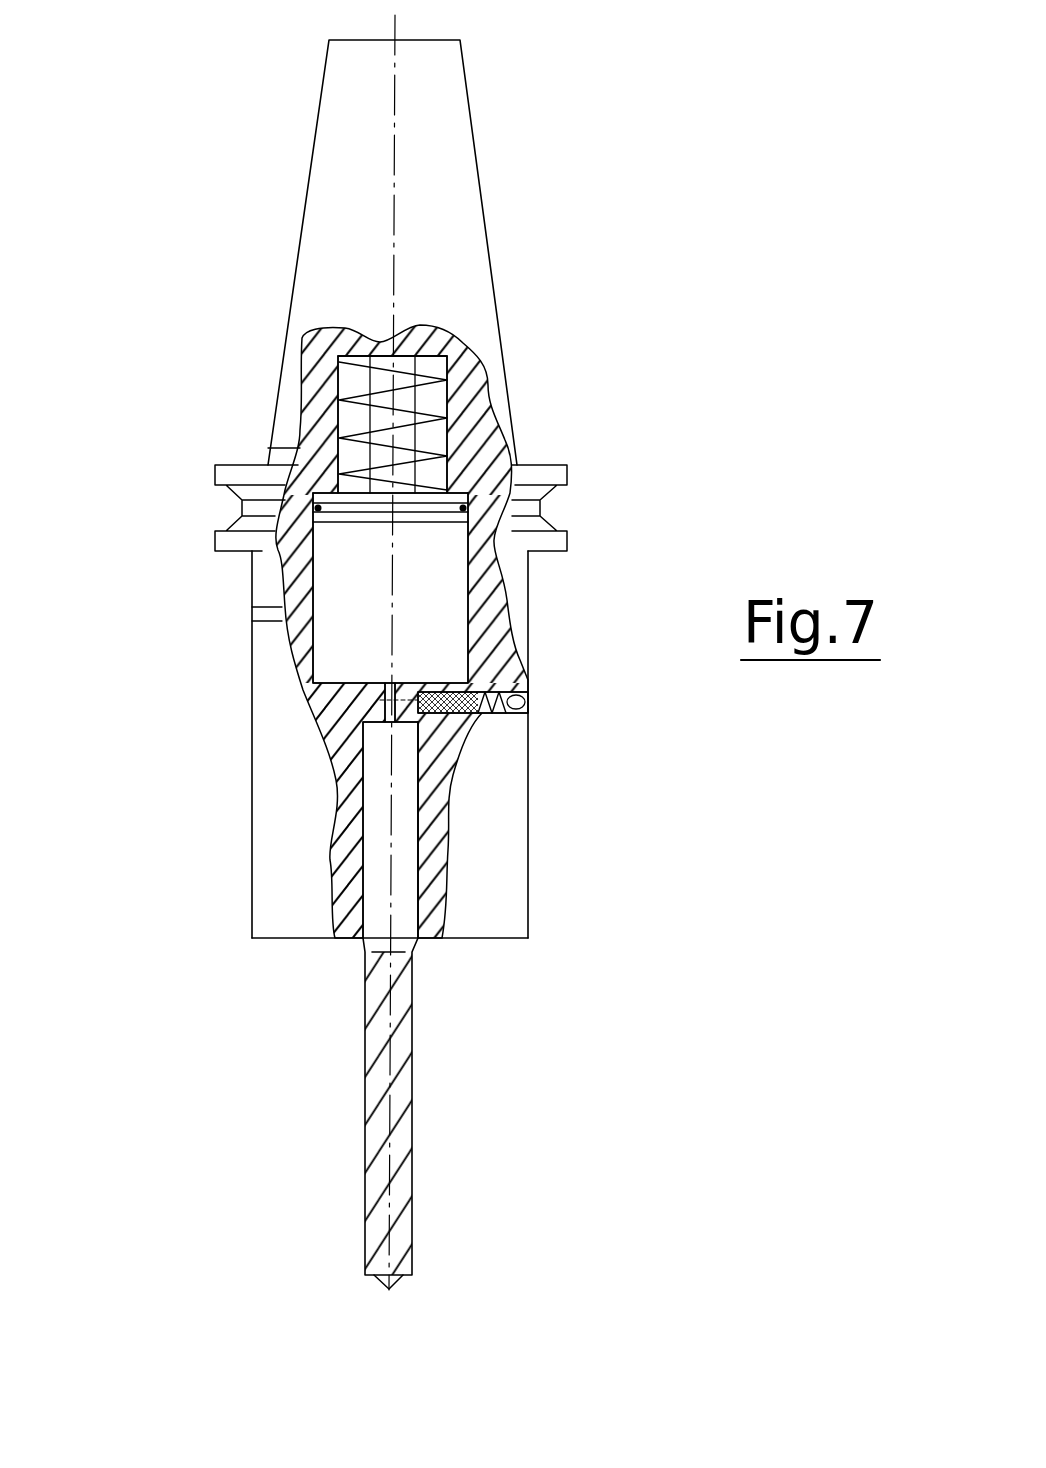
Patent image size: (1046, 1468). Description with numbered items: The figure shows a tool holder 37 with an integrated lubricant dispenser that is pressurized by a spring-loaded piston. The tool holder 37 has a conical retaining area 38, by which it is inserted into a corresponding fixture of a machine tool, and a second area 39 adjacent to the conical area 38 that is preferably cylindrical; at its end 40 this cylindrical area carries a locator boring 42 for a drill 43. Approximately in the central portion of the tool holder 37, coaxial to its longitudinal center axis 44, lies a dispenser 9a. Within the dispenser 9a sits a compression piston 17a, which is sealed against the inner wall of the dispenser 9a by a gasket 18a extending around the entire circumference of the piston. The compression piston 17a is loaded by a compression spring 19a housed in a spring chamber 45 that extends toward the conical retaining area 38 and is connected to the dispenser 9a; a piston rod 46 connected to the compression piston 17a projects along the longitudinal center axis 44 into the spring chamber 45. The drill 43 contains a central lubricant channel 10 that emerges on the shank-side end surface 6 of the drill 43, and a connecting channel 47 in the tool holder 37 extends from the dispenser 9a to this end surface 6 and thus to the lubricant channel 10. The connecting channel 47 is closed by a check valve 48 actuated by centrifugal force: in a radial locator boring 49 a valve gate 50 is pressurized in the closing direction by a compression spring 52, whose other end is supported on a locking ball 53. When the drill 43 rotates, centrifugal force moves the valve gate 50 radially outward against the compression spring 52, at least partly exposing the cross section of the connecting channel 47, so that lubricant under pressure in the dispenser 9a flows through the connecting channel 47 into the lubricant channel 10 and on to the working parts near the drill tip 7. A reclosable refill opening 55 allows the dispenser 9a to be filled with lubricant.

The longitudinal center axis 44 is at (396, 38).
The conical retaining area 38 is at (484, 172).
The tool holder 37 is at (520, 259).
The compression spring 19a is at (452, 365).
The spring chamber 45 is at (347, 392).
The piston rod 46 is at (405, 418).
The compression piston 17a is at (353, 488).
The gasket 18a is at (316, 507).
The dispenser 9a is at (442, 574).
The refill opening 55 is at (272, 615).
The connecting channel 47 is at (387, 683).
The radial locator boring 49 is at (490, 688).
The compression spring 52 is at (500, 684).
The locking ball 53 is at (522, 702).
The check valve 48 is at (482, 743).
The valve gate 50 is at (460, 727).
The shank-side end surface 6 is at (350, 701).
The second area 39 is at (250, 818).
The locator boring 42 is at (370, 858).
The lubricant channel 10 is at (396, 881).
The end 40 is at (288, 938).
The drill 43 is at (403, 1078).
The drill tip 7 is at (389, 1289).